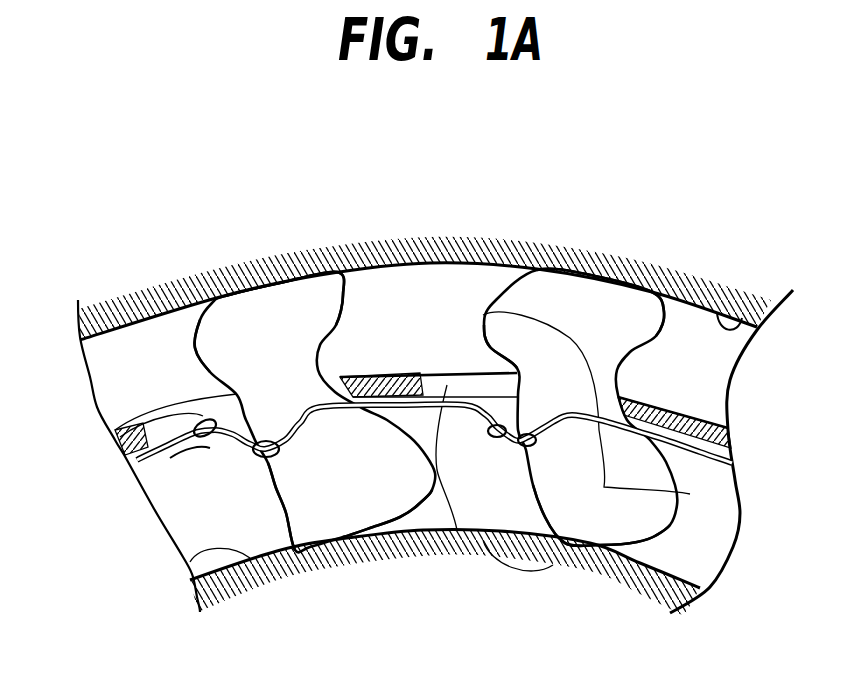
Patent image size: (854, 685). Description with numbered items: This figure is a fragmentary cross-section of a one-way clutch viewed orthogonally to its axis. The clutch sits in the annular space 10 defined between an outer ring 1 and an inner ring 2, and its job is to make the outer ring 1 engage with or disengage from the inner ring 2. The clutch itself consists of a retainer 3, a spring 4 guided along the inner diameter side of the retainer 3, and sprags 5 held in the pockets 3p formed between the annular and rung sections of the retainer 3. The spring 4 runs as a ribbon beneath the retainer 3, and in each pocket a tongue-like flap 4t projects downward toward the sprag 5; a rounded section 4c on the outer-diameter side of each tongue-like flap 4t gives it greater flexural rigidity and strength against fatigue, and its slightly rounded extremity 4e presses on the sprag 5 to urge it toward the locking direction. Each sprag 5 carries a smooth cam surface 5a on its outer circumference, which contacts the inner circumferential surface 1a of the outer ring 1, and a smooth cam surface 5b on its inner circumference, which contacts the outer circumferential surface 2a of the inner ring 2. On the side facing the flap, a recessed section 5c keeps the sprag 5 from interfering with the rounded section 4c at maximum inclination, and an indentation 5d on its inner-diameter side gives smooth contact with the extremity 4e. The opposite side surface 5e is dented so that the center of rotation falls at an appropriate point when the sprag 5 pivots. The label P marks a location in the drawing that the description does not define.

The outer ring 1 is at (510, 252).
The inner circumferential surface of the outer ring 1a is at (741, 312).
The annular space 10 is at (705, 357).
The inner ring 2 is at (488, 555).
The outer circumferential surface of the inner ring 2a is at (207, 552).
The retainer 3 is at (688, 406).
The pocket 3p is at (160, 418).
The spring 4 is at (618, 375).
The rounded section 4c is at (203, 412).
The tongue-like flap 4t is at (205, 450).
The extremity of the tongue-like flap 4e is at (262, 458).
The sprag 5 is at (306, 290).
The smooth cam surface 5a is at (216, 298).
The smooth cam surface 5b is at (416, 508).
The recessed section 5c is at (176, 355).
The indentation 5d is at (272, 475).
The side surface 5e is at (378, 365).
The phantom position P is at (640, 487).